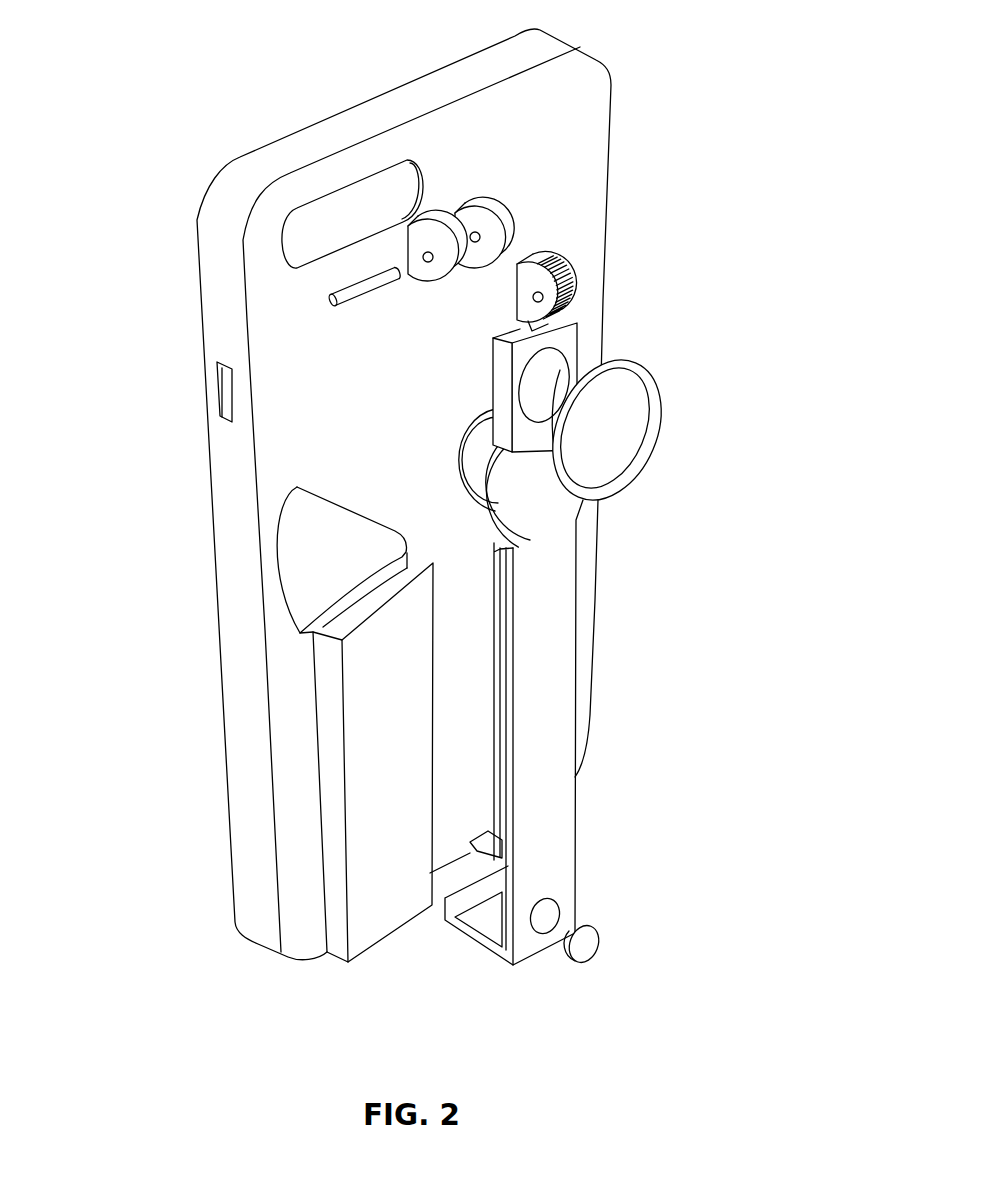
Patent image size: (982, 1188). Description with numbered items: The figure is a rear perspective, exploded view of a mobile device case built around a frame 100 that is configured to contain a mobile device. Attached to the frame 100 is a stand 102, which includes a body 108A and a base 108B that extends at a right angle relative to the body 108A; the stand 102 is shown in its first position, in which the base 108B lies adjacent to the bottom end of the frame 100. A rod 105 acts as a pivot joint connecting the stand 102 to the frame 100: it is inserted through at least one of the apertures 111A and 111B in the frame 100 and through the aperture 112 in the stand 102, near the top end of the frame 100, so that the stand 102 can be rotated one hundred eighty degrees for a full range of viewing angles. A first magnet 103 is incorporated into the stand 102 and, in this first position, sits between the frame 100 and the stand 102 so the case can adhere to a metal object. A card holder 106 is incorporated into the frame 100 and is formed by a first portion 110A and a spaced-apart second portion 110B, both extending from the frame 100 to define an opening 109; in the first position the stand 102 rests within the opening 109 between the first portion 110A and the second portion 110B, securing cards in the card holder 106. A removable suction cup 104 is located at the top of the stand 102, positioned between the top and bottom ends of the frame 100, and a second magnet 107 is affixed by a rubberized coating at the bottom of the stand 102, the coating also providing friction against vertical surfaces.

The frame 100 is at (439, 494).
The stand 102 is at (451, 615).
The first magnet 103 is at (481, 448).
The suction cup 104 is at (640, 406).
The rod 105 is at (340, 288).
The card holder 106 is at (260, 724).
The second magnet 107 is at (597, 943).
The body 108A is at (565, 803).
The base 108B is at (467, 930).
The opening 109 is at (452, 532).
The first portion 110A is at (410, 803).
The second portion 110B is at (490, 670).
The aperture 111A is at (416, 251).
The aperture 111B is at (463, 213).
The aperture 112 is at (570, 283).